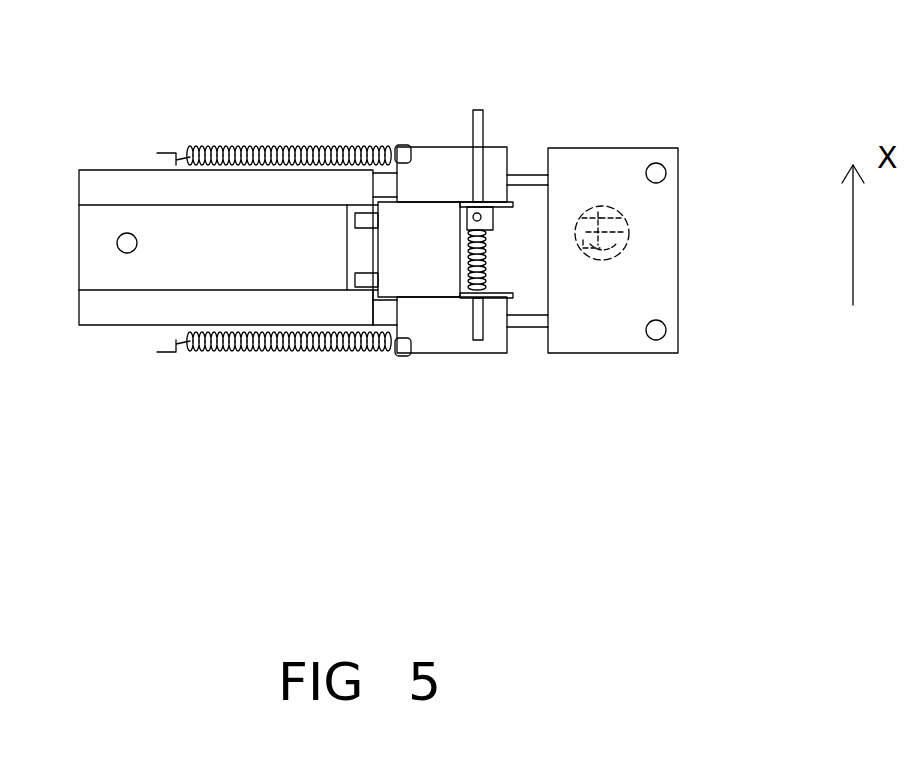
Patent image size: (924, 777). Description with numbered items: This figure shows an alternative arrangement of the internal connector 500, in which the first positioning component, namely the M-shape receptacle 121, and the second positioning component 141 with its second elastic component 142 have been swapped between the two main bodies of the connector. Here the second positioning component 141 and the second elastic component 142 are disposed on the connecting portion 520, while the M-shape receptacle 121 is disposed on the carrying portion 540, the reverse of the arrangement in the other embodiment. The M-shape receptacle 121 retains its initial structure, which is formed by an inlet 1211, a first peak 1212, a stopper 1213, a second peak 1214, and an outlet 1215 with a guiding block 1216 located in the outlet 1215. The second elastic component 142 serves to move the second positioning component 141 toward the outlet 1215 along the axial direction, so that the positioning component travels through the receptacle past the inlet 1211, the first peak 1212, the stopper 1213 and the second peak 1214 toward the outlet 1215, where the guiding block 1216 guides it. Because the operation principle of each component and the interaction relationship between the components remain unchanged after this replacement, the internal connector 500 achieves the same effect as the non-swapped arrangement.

The internal connector 500 is at (425, 260).
The carrying portion 540 is at (297, 270).
The connecting portion 520 is at (440, 272).
The second positioning component 141 is at (472, 212).
The second elastic component 142 is at (462, 296).
The M-shape receptacle 121 is at (598, 220).
The inlet 1211 is at (571, 232).
The first peak 1212 is at (620, 246).
The stopper 1213 is at (612, 232).
The second peak 1214 is at (620, 218).
The outlet 1215 is at (576, 218).
The guiding block 1216 is at (588, 215).